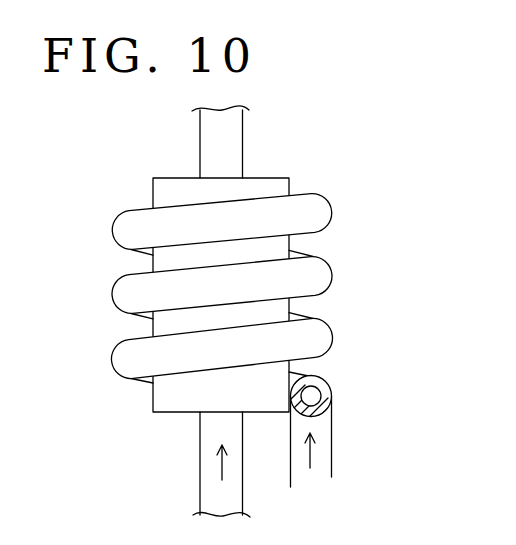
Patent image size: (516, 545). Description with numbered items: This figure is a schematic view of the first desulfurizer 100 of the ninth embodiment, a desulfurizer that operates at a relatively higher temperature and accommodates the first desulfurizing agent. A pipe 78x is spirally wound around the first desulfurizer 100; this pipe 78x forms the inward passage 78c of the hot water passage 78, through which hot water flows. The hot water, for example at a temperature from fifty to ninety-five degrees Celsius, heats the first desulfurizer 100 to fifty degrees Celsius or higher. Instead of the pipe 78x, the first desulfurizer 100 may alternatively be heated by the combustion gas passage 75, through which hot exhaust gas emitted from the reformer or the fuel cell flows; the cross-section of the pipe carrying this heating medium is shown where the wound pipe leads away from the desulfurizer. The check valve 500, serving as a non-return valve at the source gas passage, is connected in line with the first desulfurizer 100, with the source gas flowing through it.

The first desulfurizer 100 is at (167, 265).
The check valve 500 is at (215, 145).
The pipe 78x is at (313, 279).
The hot water passage 78 is at (388, 423).
The inward passage 78c is at (307, 432).
The combustion gas passage 75 is at (313, 391).